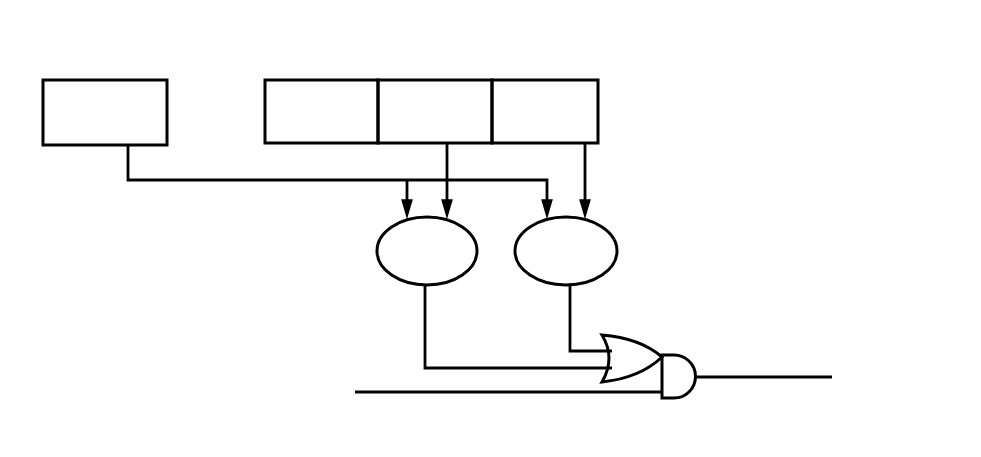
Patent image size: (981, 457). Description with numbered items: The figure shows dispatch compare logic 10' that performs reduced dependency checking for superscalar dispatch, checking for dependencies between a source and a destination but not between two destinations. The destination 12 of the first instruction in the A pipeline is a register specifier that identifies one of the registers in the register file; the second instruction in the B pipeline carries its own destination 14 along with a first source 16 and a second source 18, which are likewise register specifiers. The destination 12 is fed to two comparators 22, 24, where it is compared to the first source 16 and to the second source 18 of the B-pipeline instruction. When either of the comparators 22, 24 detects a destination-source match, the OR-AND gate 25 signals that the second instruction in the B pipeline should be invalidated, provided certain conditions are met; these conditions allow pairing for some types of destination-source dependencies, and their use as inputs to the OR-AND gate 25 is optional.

The dispatch compare logic 10' is at (438, 207).
The destination 12 is at (65, 146).
The B-PL destination register field (DST) 14 is at (329, 80).
The first source 16 is at (436, 80).
The second source 18 is at (550, 80).
The comparator 22 is at (396, 279).
The comparator 24 is at (533, 279).
The OR-AND gate 25 is at (625, 343).